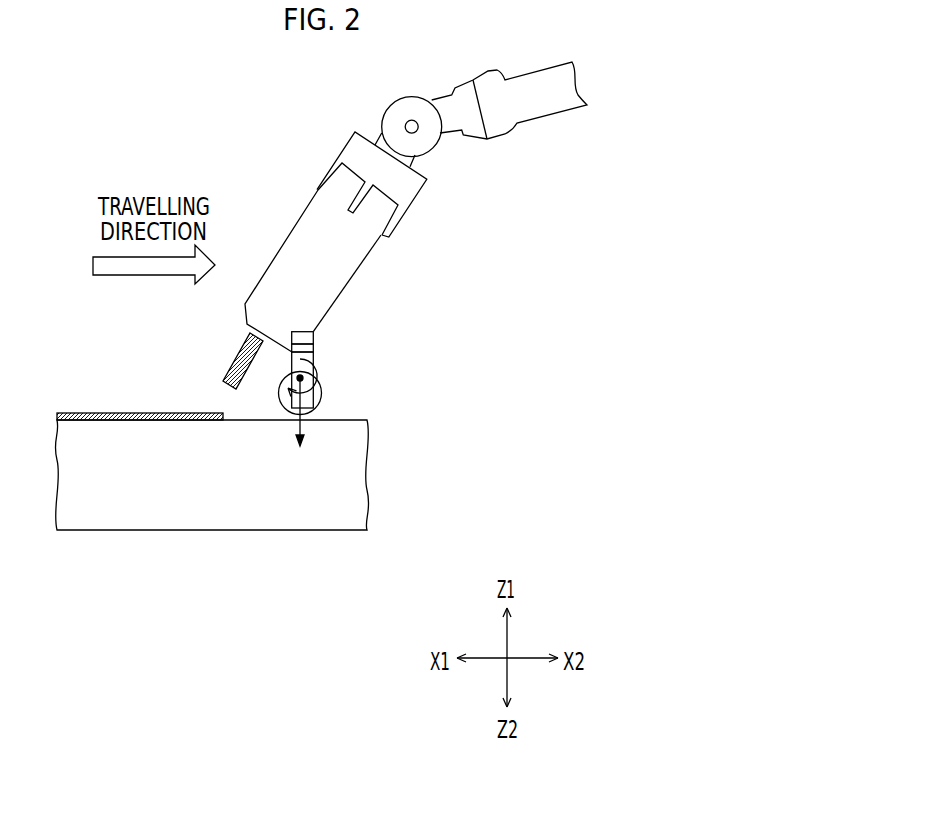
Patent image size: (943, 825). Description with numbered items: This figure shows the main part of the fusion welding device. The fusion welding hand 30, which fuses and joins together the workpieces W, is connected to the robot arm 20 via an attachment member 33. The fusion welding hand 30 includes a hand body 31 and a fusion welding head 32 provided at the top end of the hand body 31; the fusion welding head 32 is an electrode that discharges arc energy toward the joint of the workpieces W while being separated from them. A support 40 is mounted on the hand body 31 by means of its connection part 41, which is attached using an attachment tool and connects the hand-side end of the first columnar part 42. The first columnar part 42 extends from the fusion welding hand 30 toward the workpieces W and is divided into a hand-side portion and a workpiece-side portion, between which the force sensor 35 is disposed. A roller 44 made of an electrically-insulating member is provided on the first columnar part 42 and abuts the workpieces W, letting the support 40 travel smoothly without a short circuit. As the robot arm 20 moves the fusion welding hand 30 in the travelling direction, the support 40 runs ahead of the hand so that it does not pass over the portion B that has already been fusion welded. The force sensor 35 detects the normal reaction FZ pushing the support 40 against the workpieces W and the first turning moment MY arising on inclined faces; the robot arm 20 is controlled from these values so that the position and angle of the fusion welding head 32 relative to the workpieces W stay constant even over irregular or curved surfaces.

The robot arm 20 is at (402, 98).
The fusion welding hand 30 is at (264, 167).
The hand body 31 is at (312, 226).
The fusion welding head 32 is at (240, 357).
The attachment member 33 is at (353, 147).
The force sensor 35 is at (298, 360).
The support 40 is at (407, 350).
The connection part 41 is at (313, 338).
The first columnar part 42 is at (313, 349).
The roller 44 is at (286, 403).
The portion having been fusion welded B is at (100, 411).
The workpieces W is at (339, 524).